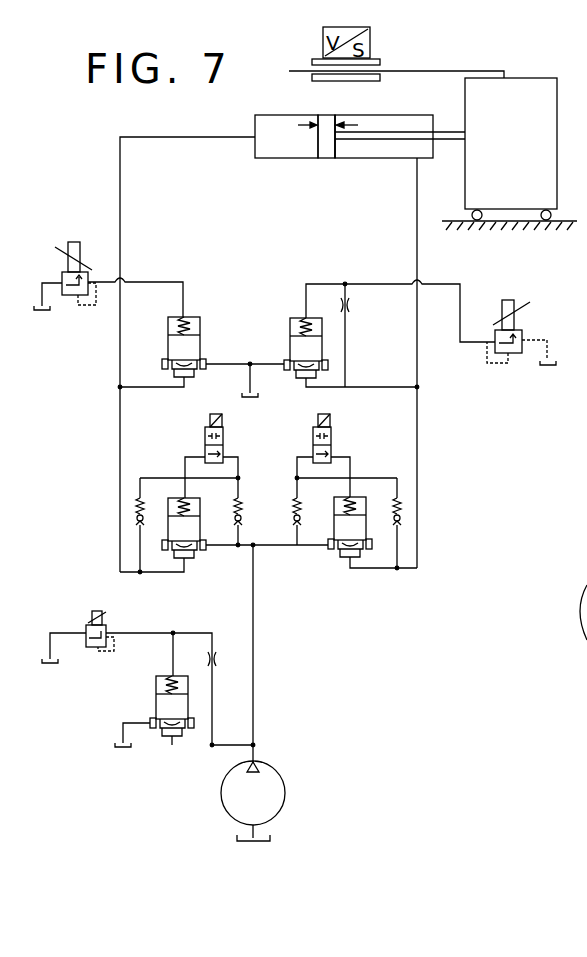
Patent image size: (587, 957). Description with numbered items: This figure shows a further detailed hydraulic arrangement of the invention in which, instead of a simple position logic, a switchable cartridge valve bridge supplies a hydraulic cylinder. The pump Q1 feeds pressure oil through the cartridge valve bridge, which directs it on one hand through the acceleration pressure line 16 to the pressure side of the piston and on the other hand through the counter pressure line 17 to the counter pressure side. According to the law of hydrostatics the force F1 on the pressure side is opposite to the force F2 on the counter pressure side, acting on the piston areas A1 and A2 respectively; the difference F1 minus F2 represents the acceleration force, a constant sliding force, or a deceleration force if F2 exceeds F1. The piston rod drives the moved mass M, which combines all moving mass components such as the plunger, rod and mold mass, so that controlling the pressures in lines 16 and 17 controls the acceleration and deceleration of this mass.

The acceleration pressure line 16 is at (121, 197).
The counter pressure line 17 is at (415, 212).
The first piston area A1 is at (315, 153).
The second piston area A2 is at (338, 117).
The pressure side force F1 is at (298, 125).
The counter pressure side force F2 is at (358, 125).
The mass / load M is at (511, 149).
The pump Q1 is at (253, 801).